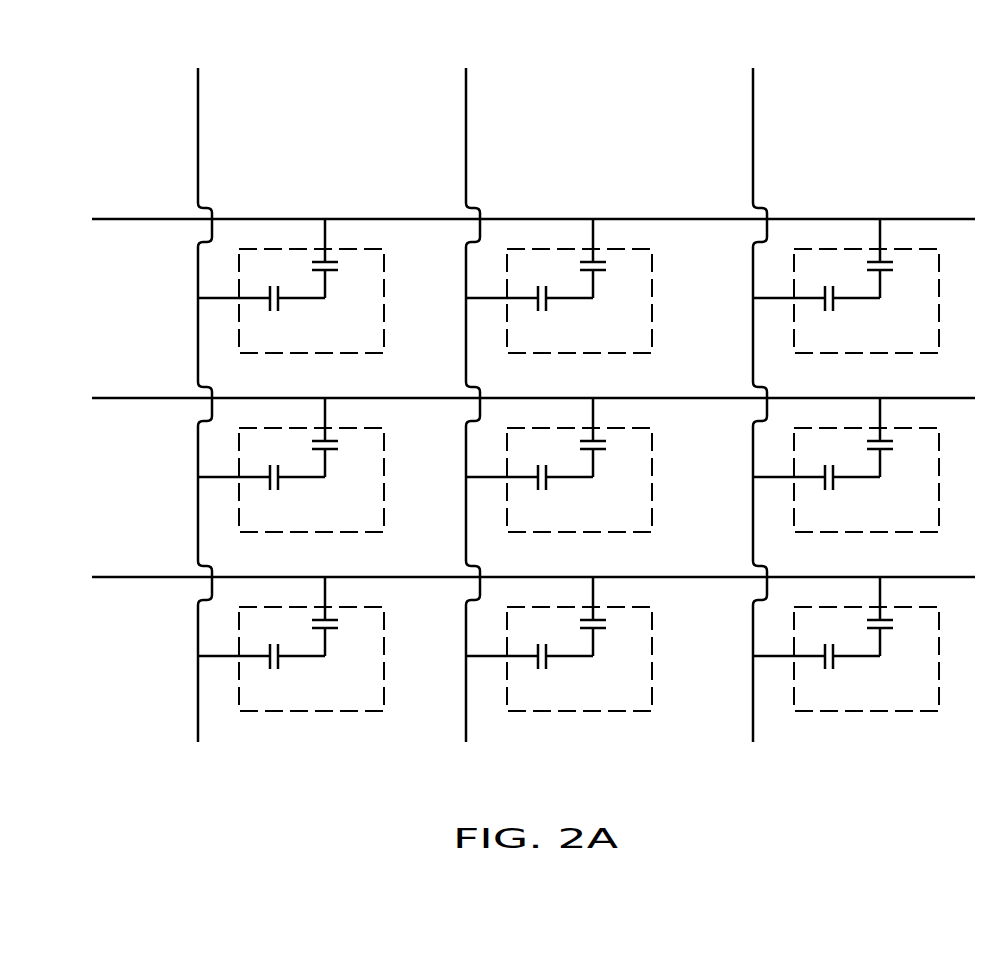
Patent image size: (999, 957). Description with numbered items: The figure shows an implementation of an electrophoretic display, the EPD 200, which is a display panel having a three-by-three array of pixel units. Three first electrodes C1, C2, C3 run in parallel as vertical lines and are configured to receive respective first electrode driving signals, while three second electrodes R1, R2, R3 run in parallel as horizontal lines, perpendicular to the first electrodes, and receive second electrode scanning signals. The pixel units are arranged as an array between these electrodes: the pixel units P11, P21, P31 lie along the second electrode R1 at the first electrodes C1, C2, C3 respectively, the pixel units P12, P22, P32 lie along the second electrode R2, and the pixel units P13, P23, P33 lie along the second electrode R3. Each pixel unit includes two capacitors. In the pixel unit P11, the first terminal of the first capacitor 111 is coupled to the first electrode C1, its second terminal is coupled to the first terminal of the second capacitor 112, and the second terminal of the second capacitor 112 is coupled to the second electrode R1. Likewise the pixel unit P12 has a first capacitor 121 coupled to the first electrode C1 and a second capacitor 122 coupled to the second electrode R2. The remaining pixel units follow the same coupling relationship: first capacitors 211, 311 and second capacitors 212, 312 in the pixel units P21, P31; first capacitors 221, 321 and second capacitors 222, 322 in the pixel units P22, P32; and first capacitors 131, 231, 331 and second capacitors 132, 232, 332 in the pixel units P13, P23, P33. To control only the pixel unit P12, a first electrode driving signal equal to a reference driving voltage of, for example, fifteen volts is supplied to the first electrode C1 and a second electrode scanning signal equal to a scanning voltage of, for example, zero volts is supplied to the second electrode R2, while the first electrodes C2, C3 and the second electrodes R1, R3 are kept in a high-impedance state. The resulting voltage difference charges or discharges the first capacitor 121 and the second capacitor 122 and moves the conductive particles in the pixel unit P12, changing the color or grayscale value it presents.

The EPD 200 is at (998, 799).
The first electrode C1 is at (199, 388).
The first electrode C2 is at (467, 388).
The first electrode C3 is at (755, 388).
The second electrode R1 is at (520, 216).
The second electrode R2 is at (520, 395).
The second electrode R3 is at (520, 574).
The pixel unit P11 is at (312, 353).
The pixel unit P21 is at (580, 353).
The pixel unit P31 is at (867, 353).
The pixel unit P12 is at (312, 532).
The pixel unit P22 is at (580, 532).
The pixel unit P32 is at (867, 532).
The pixel unit P13 is at (312, 711).
The pixel unit P23 is at (580, 711).
The pixel unit P33 is at (867, 711).
The first capacitor 111 is at (275, 318).
The second capacitor 112 is at (343, 269).
The first capacitor 211 is at (543, 318).
The second capacitor 212 is at (611, 269).
The first capacitor 311 is at (830, 318).
The second capacitor 312 is at (898, 269).
The first capacitor 121 is at (275, 497).
The second capacitor 122 is at (343, 448).
The first capacitor 221 is at (543, 497).
The second capacitor 222 is at (611, 448).
The first capacitor 321 is at (830, 497).
The second capacitor 322 is at (898, 448).
The first capacitor 131 is at (275, 676).
The second capacitor 132 is at (343, 627).
The first capacitor 231 is at (543, 676).
The second capacitor 232 is at (611, 627).
The first capacitor 331 is at (830, 676).
The second capacitor 332 is at (898, 627).